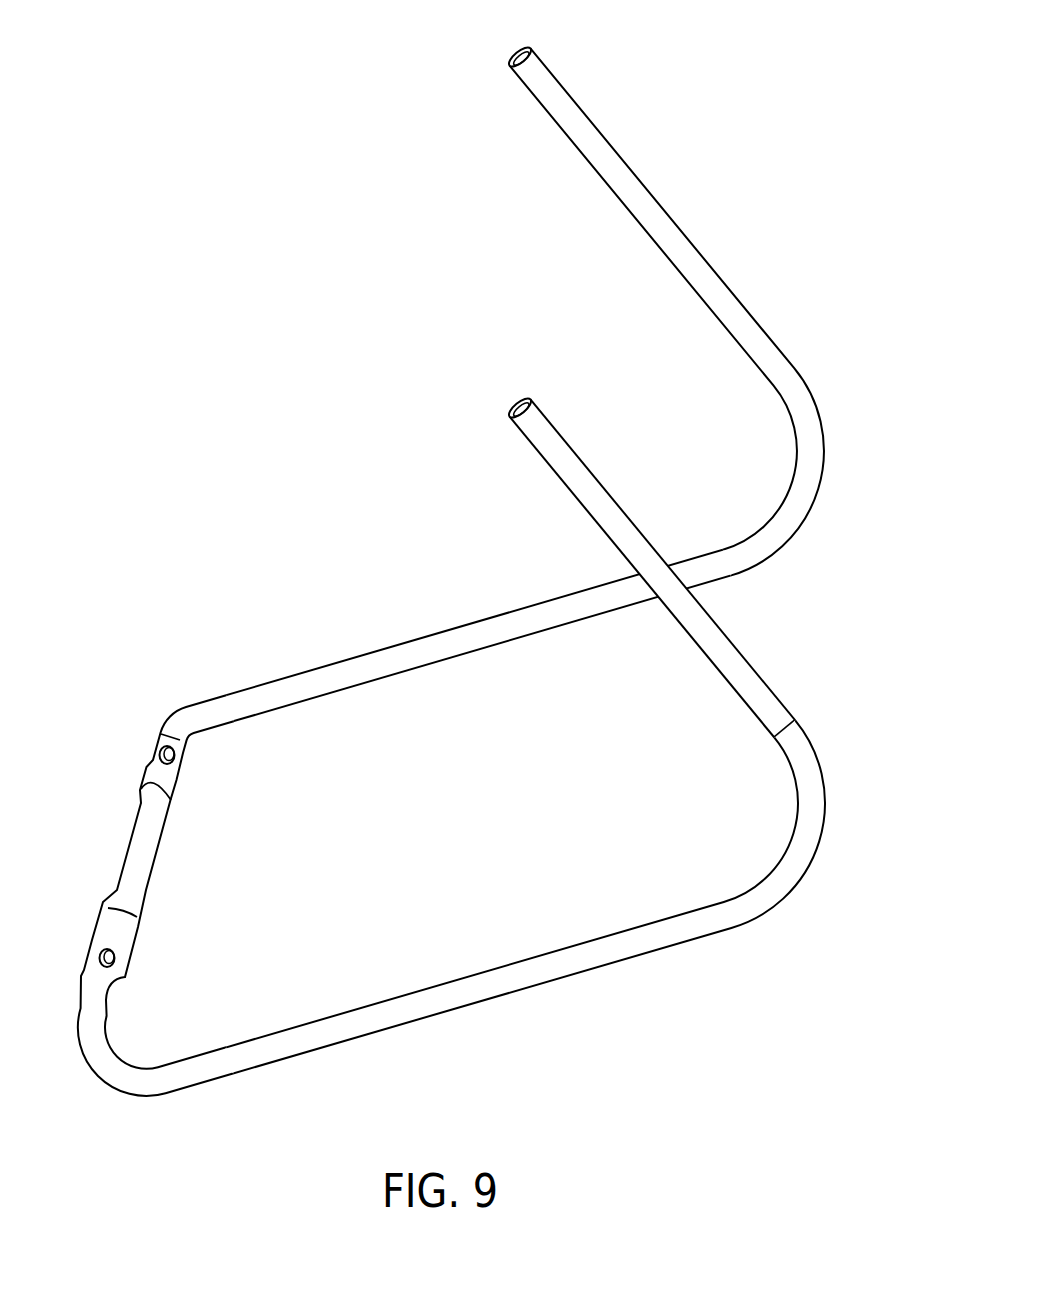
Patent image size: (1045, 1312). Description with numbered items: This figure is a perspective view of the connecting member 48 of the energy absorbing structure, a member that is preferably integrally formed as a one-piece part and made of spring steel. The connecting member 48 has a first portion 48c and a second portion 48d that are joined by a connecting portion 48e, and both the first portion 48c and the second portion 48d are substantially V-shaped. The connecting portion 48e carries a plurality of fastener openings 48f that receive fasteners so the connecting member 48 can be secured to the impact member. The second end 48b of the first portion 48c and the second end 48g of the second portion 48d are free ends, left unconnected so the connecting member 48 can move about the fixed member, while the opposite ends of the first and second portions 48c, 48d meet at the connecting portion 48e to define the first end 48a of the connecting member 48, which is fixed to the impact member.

The connecting member 48 is at (428, 575).
The first end 48a is at (130, 842).
The second end 48b is at (518, 403).
The first portion 48c is at (570, 977).
The second portion 48d is at (388, 648).
The connecting portion 48e is at (137, 930).
The fastener openings 48f is at (174, 757).
The second end 48g is at (519, 50).